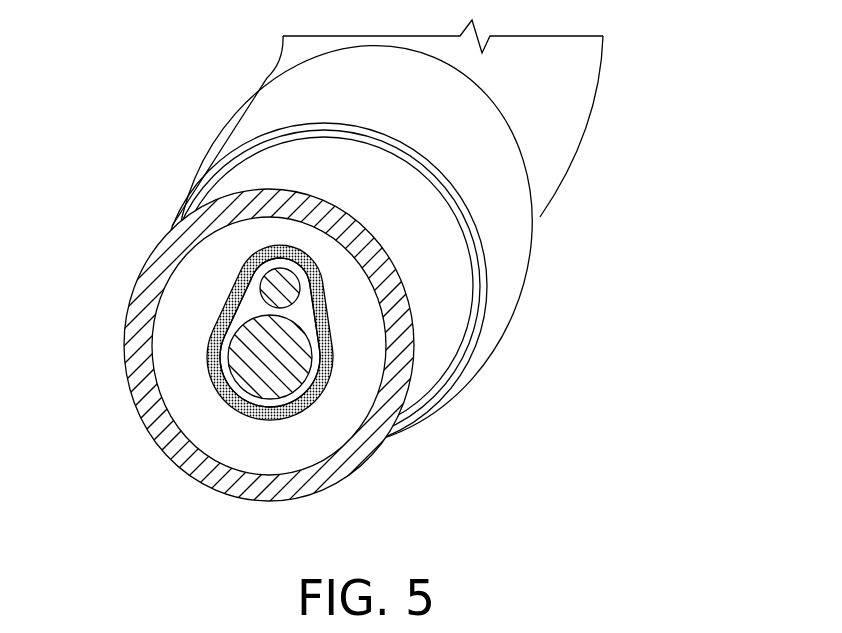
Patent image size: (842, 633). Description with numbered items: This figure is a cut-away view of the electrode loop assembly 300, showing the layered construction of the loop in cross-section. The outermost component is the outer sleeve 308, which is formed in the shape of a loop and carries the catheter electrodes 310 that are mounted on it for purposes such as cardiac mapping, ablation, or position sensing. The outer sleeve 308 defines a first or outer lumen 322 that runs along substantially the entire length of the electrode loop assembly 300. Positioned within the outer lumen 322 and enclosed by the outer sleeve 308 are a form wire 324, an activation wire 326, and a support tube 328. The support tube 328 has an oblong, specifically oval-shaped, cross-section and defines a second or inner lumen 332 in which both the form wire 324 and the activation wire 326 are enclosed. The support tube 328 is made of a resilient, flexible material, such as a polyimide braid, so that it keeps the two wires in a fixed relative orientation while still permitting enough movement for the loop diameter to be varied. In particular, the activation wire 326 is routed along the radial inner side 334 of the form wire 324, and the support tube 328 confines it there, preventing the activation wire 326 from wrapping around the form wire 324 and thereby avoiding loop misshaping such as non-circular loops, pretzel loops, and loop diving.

The electrode loop assembly 300 is at (371, 260).
The outer sleeve 308 is at (547, 127).
The catheter electrodes 310 is at (503, 227).
The outer lumen 322 is at (186, 402).
The form wire 324 is at (299, 385).
The activation wire 326 is at (296, 303).
The support tube 328 is at (273, 247).
The inner lumen 332 is at (249, 307).
The radial inner side 334 is at (300, 308).